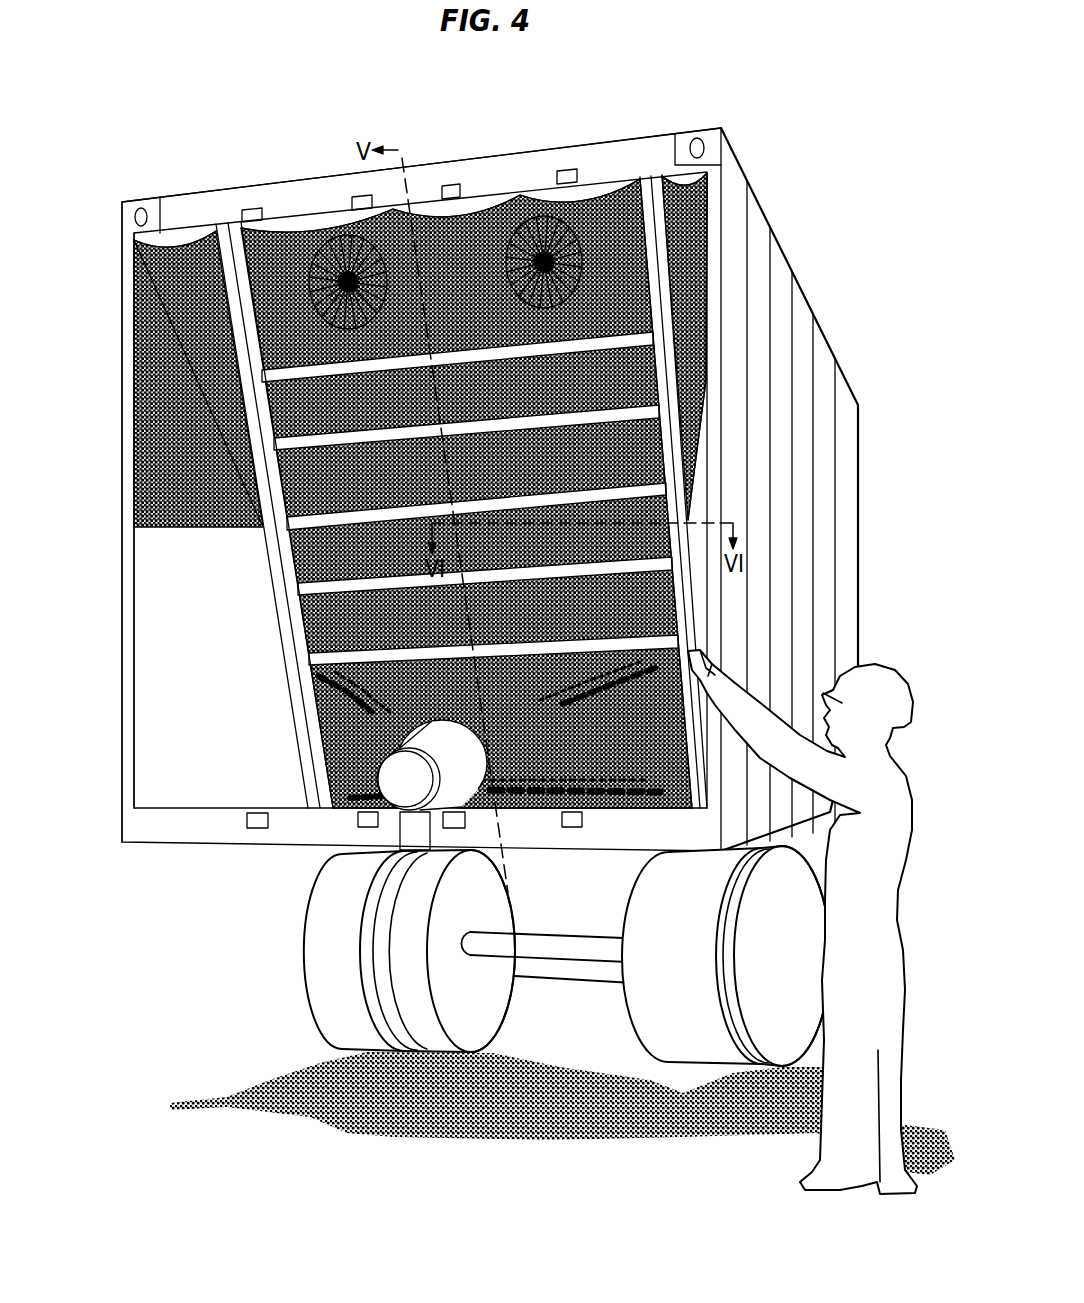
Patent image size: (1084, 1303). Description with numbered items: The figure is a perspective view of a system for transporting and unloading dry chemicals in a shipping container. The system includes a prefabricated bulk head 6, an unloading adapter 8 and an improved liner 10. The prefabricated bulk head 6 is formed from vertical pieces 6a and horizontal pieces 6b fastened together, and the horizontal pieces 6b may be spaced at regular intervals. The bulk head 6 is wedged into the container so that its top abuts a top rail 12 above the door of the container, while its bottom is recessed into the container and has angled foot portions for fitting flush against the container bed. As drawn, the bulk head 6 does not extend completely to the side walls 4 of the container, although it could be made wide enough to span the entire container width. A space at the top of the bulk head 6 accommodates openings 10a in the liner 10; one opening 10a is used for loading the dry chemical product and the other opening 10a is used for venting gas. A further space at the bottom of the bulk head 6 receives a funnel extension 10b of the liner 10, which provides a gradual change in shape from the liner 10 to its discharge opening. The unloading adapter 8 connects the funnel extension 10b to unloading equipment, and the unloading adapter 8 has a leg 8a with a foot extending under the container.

The side wall 4 is at (705, 378).
The prefabricated bulk head 6 is at (262, 531).
The vertical pieces 6a is at (257, 474).
The horizontal pieces 6b is at (652, 416).
The unloading adapter 8 is at (388, 814).
The leg 8a is at (417, 840).
The liner 10 is at (195, 376).
The openings 10a is at (348, 277).
The funnel extension 10b is at (340, 730).
The top rail 12 is at (270, 208).